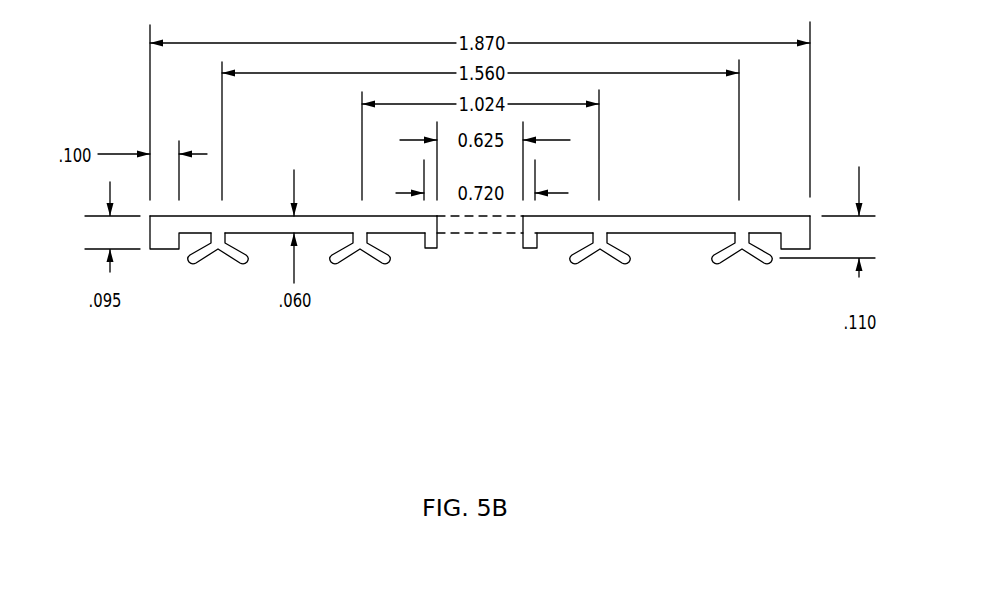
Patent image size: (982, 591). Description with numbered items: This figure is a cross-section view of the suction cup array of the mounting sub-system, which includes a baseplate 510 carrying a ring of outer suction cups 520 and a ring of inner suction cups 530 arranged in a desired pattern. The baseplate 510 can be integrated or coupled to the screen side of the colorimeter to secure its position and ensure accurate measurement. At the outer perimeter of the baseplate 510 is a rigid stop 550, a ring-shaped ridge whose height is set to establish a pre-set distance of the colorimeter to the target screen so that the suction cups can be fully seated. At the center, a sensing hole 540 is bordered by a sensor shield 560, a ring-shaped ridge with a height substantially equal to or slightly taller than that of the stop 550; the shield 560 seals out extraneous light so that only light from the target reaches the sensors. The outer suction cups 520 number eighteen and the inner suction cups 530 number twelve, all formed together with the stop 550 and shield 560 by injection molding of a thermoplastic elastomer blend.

The baseplate 510 is at (663, 222).
The outer suction cups 520 is at (235, 259).
The inner suction cups 530 is at (377, 262).
The sensing hole 540 is at (480, 227).
The rigid stop 550 is at (165, 238).
The sensor shield 560 is at (527, 248).